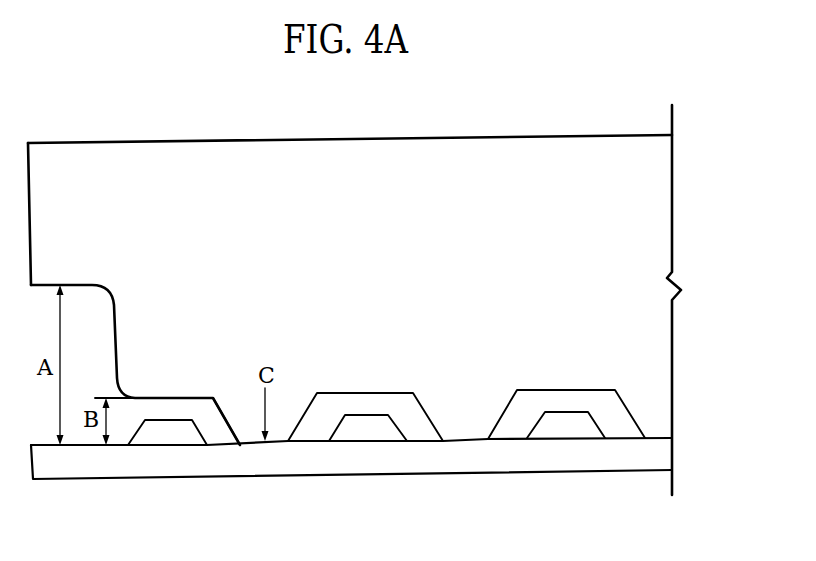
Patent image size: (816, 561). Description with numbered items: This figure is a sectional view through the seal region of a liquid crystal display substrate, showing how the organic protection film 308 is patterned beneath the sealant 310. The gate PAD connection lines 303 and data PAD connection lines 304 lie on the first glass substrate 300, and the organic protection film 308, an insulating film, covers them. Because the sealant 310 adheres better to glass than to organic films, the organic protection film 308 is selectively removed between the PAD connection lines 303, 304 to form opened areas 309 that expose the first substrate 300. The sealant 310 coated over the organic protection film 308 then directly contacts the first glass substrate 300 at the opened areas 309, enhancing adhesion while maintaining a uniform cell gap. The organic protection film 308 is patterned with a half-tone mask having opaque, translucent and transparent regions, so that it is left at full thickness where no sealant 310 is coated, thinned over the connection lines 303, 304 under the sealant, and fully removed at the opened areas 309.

The first glass substrate 300 is at (670, 452).
The gate PAD connection lines 303 is at (401, 468).
The data PAD connection lines 304 is at (577, 425).
The organic protection film 308 is at (310, 430).
The opened areas 309 is at (462, 427).
The sealant 310 is at (667, 205).